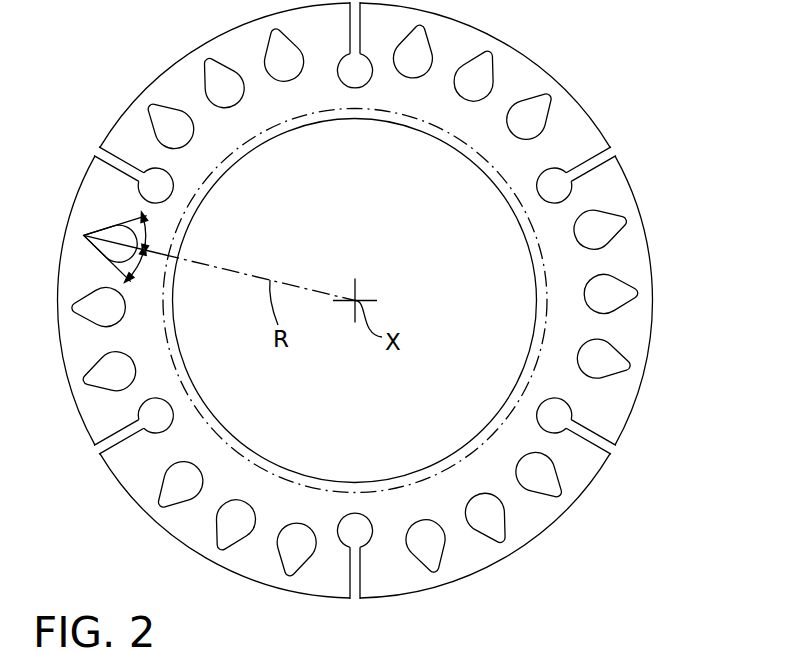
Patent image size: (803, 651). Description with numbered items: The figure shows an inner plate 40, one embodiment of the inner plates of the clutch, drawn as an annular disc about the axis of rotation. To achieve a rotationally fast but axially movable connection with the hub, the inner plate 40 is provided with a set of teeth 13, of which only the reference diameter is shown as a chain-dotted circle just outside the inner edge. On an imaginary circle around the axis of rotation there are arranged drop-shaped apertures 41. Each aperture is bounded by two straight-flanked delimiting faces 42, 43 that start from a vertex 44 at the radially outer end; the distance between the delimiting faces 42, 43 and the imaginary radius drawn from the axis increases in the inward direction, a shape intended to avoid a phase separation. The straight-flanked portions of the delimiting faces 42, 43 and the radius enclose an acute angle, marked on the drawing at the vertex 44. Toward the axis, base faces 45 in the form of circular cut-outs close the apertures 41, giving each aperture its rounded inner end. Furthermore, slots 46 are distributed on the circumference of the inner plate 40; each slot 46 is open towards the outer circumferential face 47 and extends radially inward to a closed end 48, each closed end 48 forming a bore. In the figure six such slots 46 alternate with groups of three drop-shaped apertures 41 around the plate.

The inner plate 40 is at (394, 300).
The set of teeth 13 is at (510, 182).
The drop-shaped apertures 41 is at (235, 95).
The delimiting face 42 is at (93, 232).
The delimiting face 43 is at (103, 264).
The vertex 44 is at (105, 242).
The base face 45 is at (128, 286).
The slots 46 is at (112, 435).
The outer circumferential face 47 is at (140, 507).
The closed ends 48 is at (165, 410).